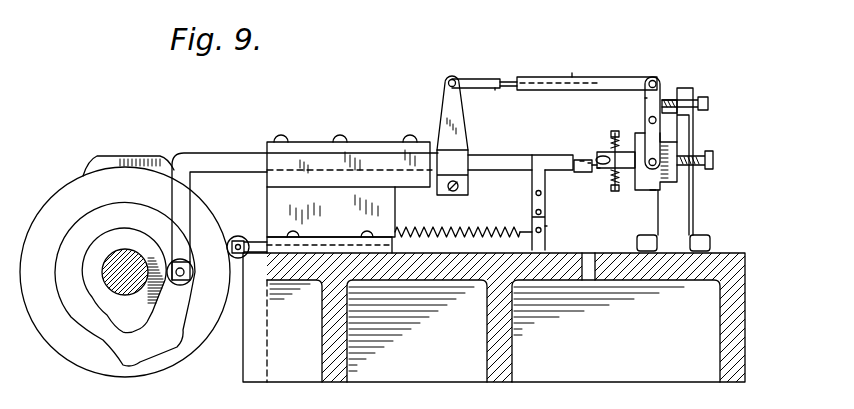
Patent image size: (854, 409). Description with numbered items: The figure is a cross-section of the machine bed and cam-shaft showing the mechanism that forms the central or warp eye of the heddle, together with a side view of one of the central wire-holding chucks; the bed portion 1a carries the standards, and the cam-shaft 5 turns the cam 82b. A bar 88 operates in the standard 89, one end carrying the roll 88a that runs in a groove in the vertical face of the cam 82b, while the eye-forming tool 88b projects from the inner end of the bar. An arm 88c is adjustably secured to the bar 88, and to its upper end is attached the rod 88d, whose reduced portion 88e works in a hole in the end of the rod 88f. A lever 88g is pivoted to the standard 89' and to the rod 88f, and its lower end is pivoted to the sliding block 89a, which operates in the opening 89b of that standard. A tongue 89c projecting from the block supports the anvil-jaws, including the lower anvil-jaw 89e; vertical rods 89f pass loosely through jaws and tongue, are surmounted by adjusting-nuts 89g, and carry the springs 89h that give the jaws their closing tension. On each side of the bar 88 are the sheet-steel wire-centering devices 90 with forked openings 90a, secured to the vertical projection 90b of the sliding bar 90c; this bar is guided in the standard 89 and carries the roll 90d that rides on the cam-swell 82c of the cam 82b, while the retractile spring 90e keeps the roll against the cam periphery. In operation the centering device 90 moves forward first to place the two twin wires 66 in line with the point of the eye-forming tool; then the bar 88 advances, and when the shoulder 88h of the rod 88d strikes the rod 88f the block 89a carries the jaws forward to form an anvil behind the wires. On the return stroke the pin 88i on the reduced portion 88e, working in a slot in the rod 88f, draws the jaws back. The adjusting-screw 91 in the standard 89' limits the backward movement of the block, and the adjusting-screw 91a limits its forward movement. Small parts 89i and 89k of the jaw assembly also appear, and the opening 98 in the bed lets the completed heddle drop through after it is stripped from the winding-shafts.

The base 1a is at (747, 291).
The shaft 5 is at (102, 270).
The twin wires 66 is at (596, 168).
The cam 82b is at (117, 284).
The cam-swell 82c is at (125, 265).
The bar 88 is at (372, 215).
The roll 88a is at (177, 287).
The eye-forming tool 88b is at (583, 160).
The arm 88c is at (448, 108).
The rod 88d is at (483, 79).
The reduced portion 88e is at (507, 80).
The rod 88f is at (622, 70).
The lever 88g is at (646, 98).
The shoulder 88h is at (500, 89).
The pin 88i is at (573, 77).
The standard 89 is at (348, 194).
The standard 89' is at (693, 169).
The sliding block 89a is at (655, 192).
The opening 89b is at (678, 148).
The tongue 89c is at (640, 192).
The lower anvil-jaw 89e is at (611, 178).
The vertical rods 89f is at (618, 138).
The adjusting-nuts 89g is at (611, 132).
The springs 89h is at (619, 140).
The arm end 89i is at (590, 162).
The link 89k is at (598, 170).
The wire-centering devices 90 is at (552, 158).
The forked opening 90a is at (584, 167).
The vertical projection 90b is at (546, 228).
The sliding bar 90c is at (431, 248).
The roll 90d is at (234, 237).
The retractile spring 90e is at (478, 224).
The adjusting-screw 91 is at (713, 163).
The adjusting-screw 91a is at (709, 103).
The openings 98 is at (590, 280).